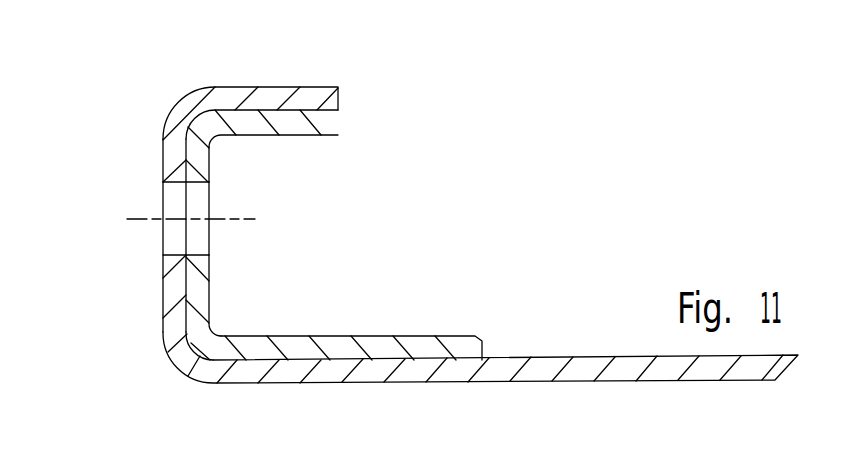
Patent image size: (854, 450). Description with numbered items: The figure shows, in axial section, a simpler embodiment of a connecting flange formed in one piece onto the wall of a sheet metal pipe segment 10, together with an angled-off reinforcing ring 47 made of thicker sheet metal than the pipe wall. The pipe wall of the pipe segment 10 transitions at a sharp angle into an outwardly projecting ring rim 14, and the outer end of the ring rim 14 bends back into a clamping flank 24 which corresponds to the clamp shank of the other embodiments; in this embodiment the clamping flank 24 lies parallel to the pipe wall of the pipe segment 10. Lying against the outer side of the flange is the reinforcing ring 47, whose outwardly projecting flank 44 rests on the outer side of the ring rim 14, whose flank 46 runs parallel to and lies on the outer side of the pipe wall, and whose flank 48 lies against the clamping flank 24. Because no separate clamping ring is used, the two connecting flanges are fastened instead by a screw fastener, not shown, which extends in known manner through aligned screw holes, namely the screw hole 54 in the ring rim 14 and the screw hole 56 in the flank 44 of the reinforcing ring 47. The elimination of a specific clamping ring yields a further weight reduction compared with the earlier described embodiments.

The pipe segment 10 is at (561, 352).
The ring rim 14 is at (173, 152).
The clamping flank 24 is at (235, 98).
The flank of the reinforcing ring 44 is at (197, 160).
The flank of the reinforcing ring 46 is at (303, 347).
The reinforcing ring 47 is at (232, 296).
The flank of the reinforcing ring 48 is at (286, 120).
The screw hole 54 is at (165, 182).
The screw hole 56 is at (186, 183).